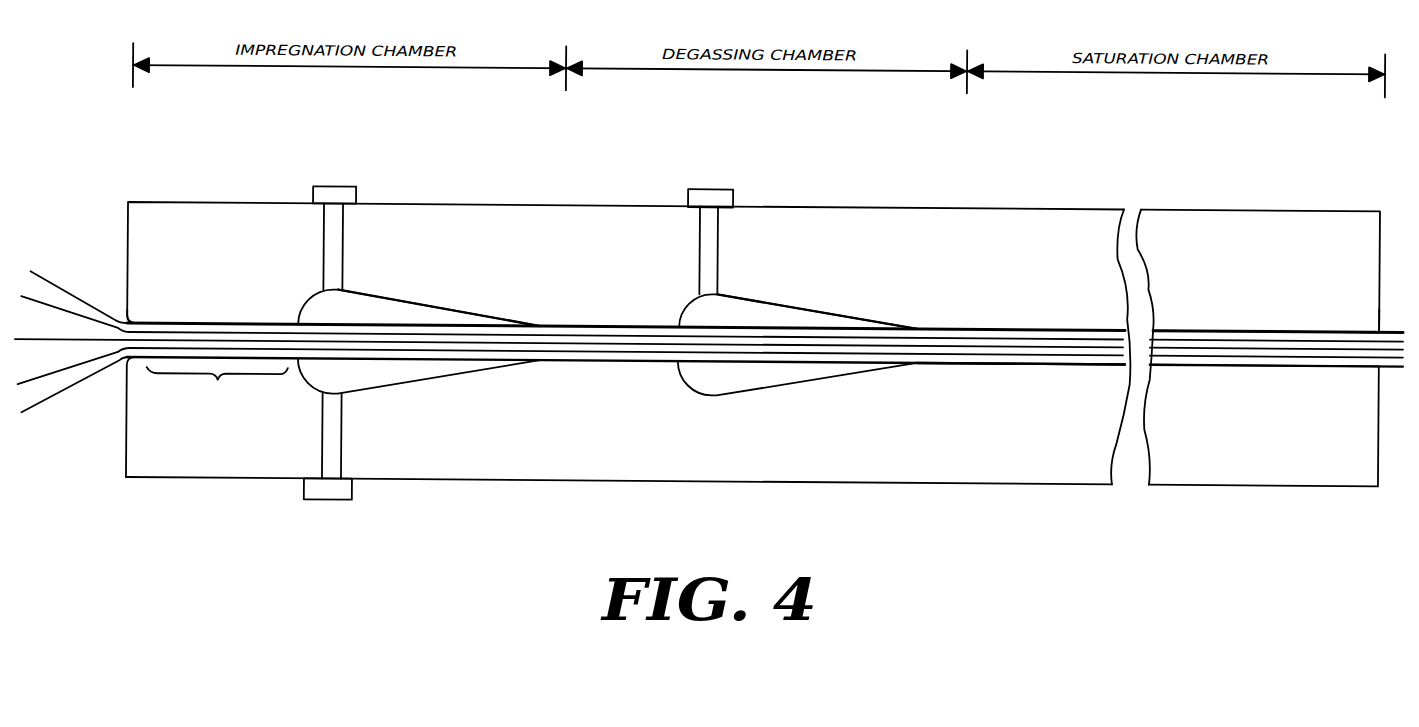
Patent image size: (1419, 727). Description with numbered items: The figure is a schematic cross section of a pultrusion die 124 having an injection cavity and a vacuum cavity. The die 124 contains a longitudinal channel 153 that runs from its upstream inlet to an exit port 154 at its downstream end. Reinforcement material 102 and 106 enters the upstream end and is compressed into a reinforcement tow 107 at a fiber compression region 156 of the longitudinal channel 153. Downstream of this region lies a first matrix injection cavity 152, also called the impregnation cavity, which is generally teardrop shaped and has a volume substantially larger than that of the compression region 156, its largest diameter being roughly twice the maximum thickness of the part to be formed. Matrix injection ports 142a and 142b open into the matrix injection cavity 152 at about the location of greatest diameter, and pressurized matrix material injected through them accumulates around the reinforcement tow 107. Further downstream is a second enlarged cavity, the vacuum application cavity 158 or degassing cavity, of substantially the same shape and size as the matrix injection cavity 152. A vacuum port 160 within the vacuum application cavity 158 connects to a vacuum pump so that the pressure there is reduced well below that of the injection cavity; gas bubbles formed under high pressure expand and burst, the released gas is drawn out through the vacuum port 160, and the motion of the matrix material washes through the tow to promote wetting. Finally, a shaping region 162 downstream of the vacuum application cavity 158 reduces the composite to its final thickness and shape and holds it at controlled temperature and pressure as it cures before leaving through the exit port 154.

The reinforcement material 102 is at (52, 304).
The reinforcement material 106 is at (50, 283).
The reinforcement tow 107 is at (137, 322).
The die 124 is at (127, 466).
The matrix injection port 142a is at (345, 392).
The matrix injection port 142b is at (345, 287).
The matrix injection cavity 152 is at (438, 304).
The longitudinal channel 153 is at (195, 322).
The exit port 154 is at (1379, 323).
The fiber compression region 156 is at (216, 390).
The vacuum application cavity 158 is at (779, 309).
The vacuum port 160 is at (717, 290).
The shaping region 162 is at (1065, 358).